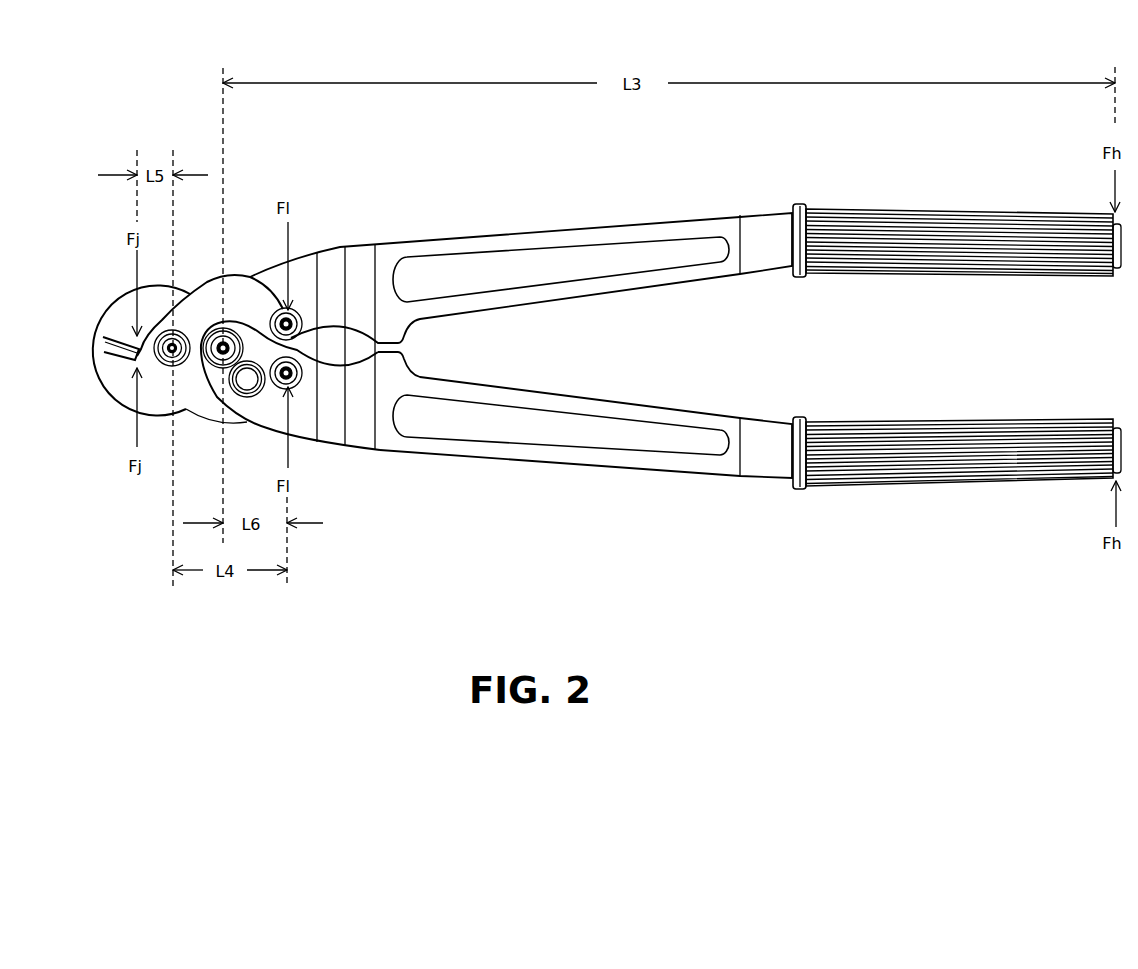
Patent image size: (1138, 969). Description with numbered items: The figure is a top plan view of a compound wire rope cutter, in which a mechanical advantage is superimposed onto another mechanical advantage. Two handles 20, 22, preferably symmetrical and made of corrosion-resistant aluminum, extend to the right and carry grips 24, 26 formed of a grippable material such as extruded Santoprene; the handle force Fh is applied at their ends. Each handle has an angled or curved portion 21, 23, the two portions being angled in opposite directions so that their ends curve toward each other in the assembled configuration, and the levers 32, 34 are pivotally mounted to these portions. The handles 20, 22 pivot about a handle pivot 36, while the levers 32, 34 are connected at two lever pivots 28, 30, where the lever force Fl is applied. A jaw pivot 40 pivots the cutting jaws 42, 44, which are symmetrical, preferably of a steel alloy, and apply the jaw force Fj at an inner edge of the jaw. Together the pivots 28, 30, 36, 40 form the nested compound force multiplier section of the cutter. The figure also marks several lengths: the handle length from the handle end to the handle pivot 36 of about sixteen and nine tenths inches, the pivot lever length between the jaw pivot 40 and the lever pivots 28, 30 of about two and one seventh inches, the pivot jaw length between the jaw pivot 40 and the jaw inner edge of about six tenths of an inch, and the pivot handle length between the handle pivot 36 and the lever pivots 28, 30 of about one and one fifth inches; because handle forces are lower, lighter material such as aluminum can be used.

The handle 20 is at (623, 220).
The angled or curved portion 21 is at (300, 257).
The handle 22 is at (671, 405).
The angled or curved portion 23 is at (304, 437).
The grip 24 is at (965, 207).
The grip 26 is at (948, 417).
The lever pivot 28 is at (298, 385).
The lever pivot 30 is at (299, 312).
The lever 32 is at (238, 273).
The lever 34 is at (239, 421).
The handle pivot 36 is at (221, 362).
The jaw pivot 40 is at (172, 357).
The cutting jaw 42 is at (112, 392).
The cutting jaw 44 is at (117, 300).